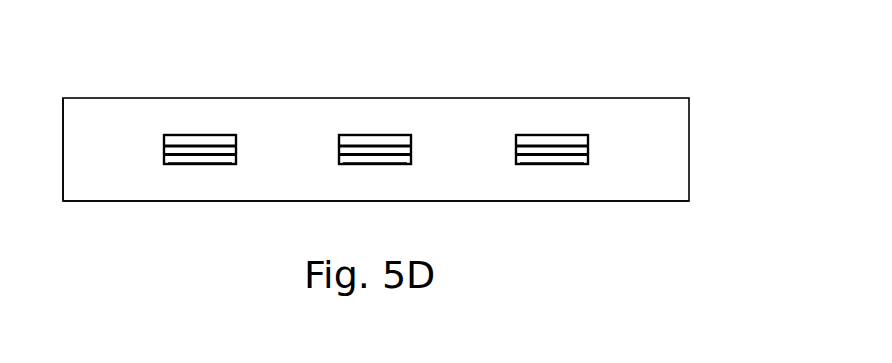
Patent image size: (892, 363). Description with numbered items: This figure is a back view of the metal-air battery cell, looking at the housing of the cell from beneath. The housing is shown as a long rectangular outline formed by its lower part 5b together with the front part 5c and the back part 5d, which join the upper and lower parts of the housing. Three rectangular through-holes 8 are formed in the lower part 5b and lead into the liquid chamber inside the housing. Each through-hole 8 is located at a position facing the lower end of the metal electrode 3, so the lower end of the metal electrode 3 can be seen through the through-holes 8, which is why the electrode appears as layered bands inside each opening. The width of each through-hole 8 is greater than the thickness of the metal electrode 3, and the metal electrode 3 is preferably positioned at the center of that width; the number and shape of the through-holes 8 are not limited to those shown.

The metal electrode 3 is at (194, 148).
The lower part 5b is at (679, 144).
The front part 5c is at (62, 113).
The back part 5d is at (679, 180).
The through-hole 8 is at (177, 163).